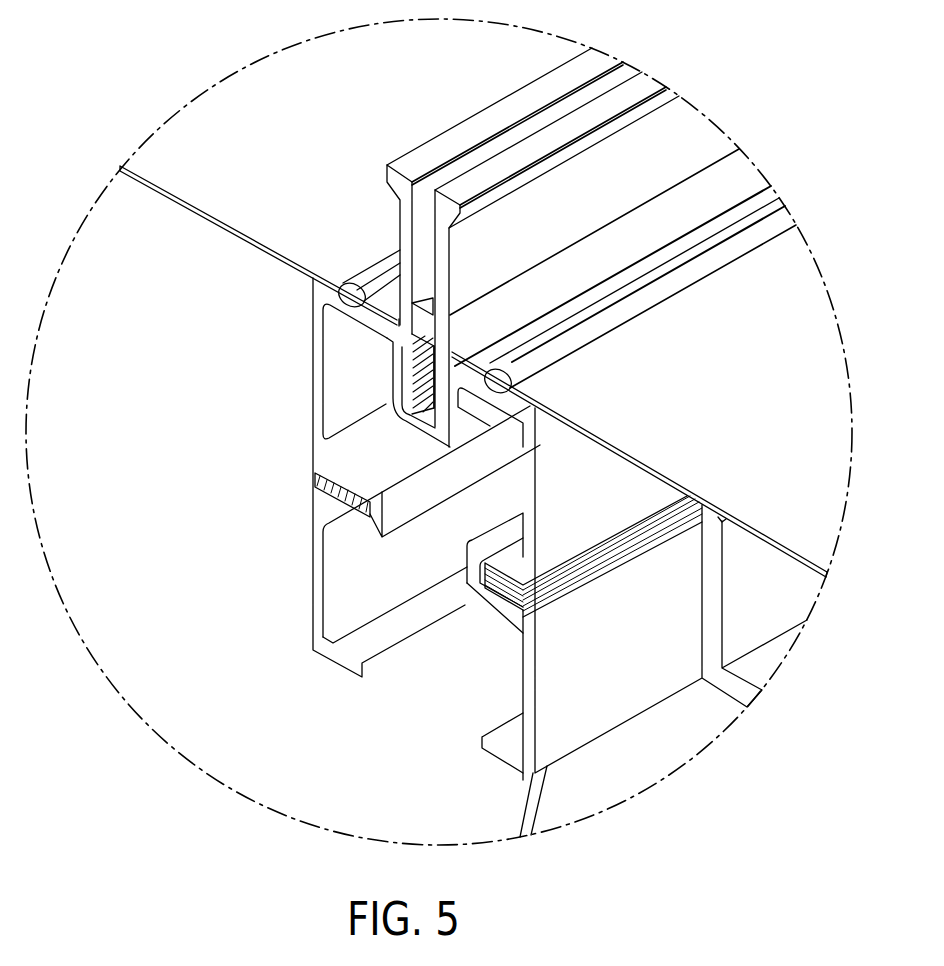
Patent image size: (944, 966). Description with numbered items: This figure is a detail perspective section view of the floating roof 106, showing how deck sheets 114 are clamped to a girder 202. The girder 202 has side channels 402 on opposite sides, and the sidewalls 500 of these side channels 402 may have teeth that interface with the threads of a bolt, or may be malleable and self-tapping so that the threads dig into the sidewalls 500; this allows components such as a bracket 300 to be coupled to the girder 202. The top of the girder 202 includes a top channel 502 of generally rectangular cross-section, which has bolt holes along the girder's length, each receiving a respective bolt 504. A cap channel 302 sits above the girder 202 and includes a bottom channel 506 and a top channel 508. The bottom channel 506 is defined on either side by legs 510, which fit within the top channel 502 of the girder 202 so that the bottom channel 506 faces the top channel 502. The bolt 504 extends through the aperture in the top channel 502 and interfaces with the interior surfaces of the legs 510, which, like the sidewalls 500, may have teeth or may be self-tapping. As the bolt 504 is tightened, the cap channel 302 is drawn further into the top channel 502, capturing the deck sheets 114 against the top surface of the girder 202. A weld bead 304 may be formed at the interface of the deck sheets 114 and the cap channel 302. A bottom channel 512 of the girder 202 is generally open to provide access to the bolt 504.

The floating roof 106 is at (845, 223).
The deck sheets 114 is at (222, 153).
The girder 202 is at (318, 607).
The bracket 300 is at (753, 635).
The cap channel 302 is at (695, 143).
The weld bead 304 is at (583, 337).
The side channels 402 is at (316, 478).
The sidewalls 500 is at (507, 605).
The top channel 502 is at (427, 417).
The bolt 504 is at (477, 447).
The bottom channel 506 is at (427, 377).
The top channel 508 is at (587, 87).
The legs 510 is at (408, 366).
The bottom channel 512 is at (439, 685).